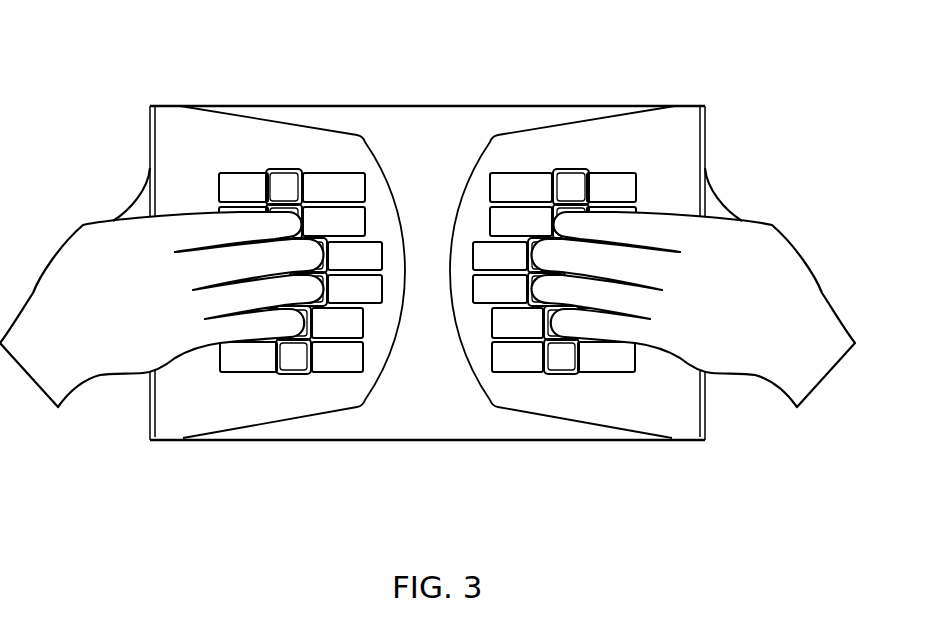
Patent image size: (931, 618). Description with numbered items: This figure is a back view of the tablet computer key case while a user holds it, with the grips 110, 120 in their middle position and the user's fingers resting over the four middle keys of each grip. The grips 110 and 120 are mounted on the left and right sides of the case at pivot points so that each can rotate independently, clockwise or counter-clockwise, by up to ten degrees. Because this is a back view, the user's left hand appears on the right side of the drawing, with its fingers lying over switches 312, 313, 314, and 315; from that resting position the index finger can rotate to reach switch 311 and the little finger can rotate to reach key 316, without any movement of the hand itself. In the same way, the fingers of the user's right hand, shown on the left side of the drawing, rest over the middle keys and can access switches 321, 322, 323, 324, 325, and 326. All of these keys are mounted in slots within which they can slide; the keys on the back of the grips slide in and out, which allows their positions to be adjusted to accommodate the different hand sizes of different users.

The grip 110 is at (705, 440).
The grip 120 is at (150, 440).
The switch 311 is at (557, 168).
The switch 312 is at (552, 200).
The switch 313 is at (527, 236).
The switch 314 is at (532, 306).
The switch 315 is at (545, 340).
The key 316 is at (550, 374).
The switch 321 is at (298, 170).
The switch 322 is at (303, 200).
The switch 323 is at (330, 236).
The switch 324 is at (323, 305).
The switch 325 is at (313, 340).
The switch 326 is at (308, 375).